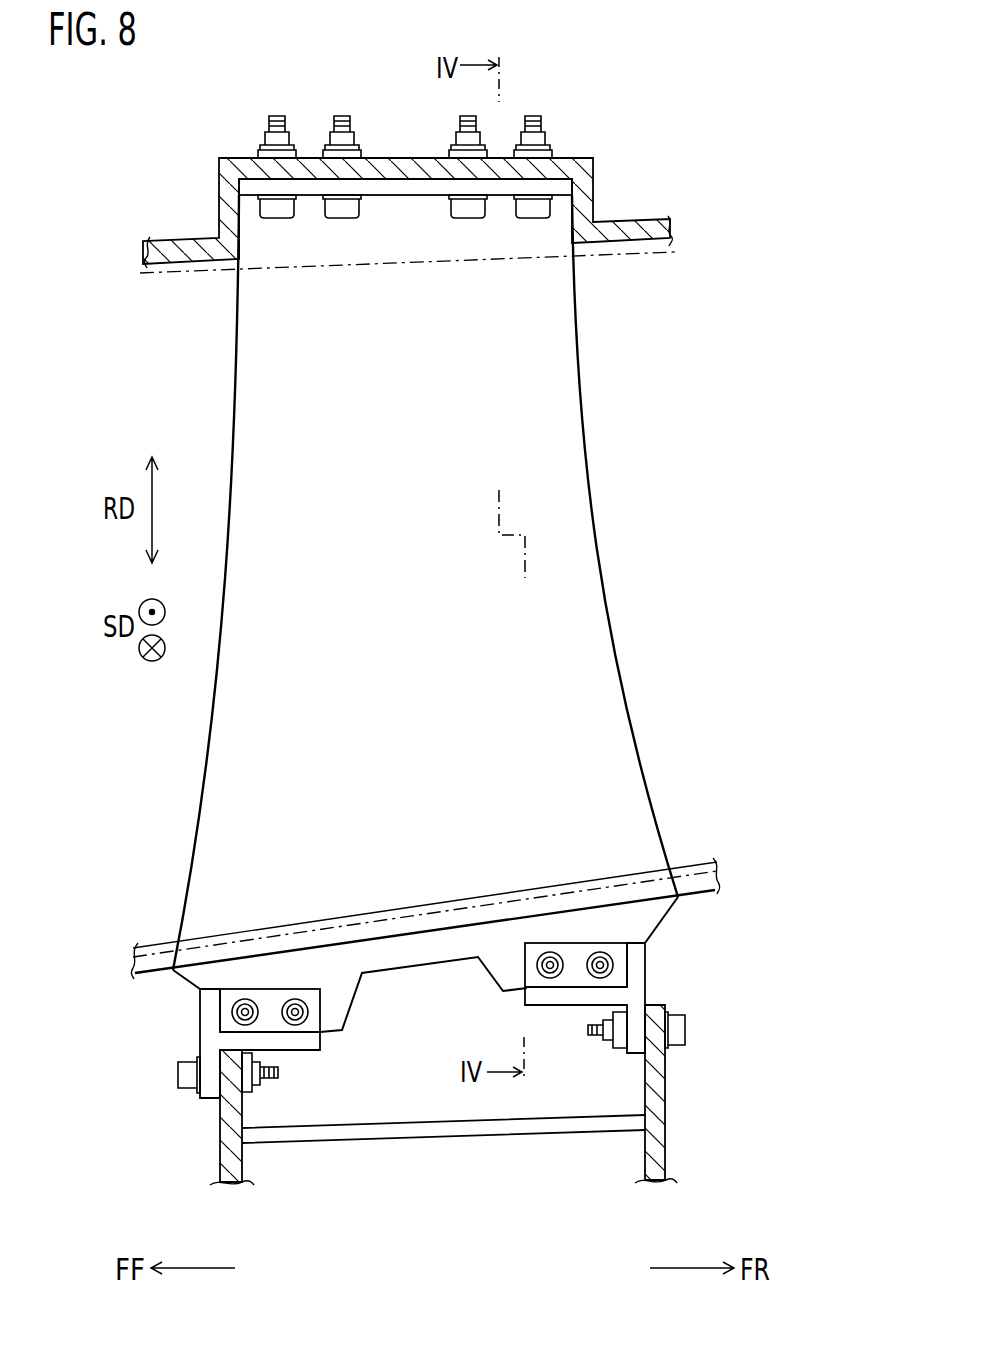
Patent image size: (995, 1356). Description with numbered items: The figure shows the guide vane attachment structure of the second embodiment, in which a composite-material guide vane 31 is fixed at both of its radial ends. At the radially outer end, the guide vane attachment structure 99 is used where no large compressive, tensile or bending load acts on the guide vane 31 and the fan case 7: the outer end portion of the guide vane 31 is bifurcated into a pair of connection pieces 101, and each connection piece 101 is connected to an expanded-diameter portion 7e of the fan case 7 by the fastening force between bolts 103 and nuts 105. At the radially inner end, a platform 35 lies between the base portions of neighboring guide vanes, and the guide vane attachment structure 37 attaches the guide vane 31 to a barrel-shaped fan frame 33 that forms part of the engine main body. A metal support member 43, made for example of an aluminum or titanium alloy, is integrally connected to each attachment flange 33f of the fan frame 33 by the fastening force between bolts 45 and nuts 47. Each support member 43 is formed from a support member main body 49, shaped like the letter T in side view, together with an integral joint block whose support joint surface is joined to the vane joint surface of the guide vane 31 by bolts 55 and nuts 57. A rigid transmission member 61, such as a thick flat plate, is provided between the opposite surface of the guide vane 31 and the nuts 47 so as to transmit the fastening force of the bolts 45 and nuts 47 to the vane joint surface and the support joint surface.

The fan case 7 is at (647, 223).
The expanded-diameter portion 7e is at (253, 187).
The guide vane 31 is at (612, 571).
The fan frame 33 is at (679, 1136).
The attachment flange 33f is at (222, 1105).
The platform 35 is at (415, 908).
The guide vane attachment structure 37 is at (432, 1013).
The support member 43 is at (205, 1045).
The bolt 45 is at (178, 1078).
The nut 47 is at (257, 1086).
The support member main body 49 is at (268, 1040).
The bolt 55 is at (233, 1022).
The nut 57 is at (233, 1007).
The transmission member 61 is at (268, 1000).
The guide vane attachment structure 99 is at (404, 131).
The connection piece 101 is at (418, 192).
The bolt 103 is at (345, 212).
The nut 105 is at (341, 128).